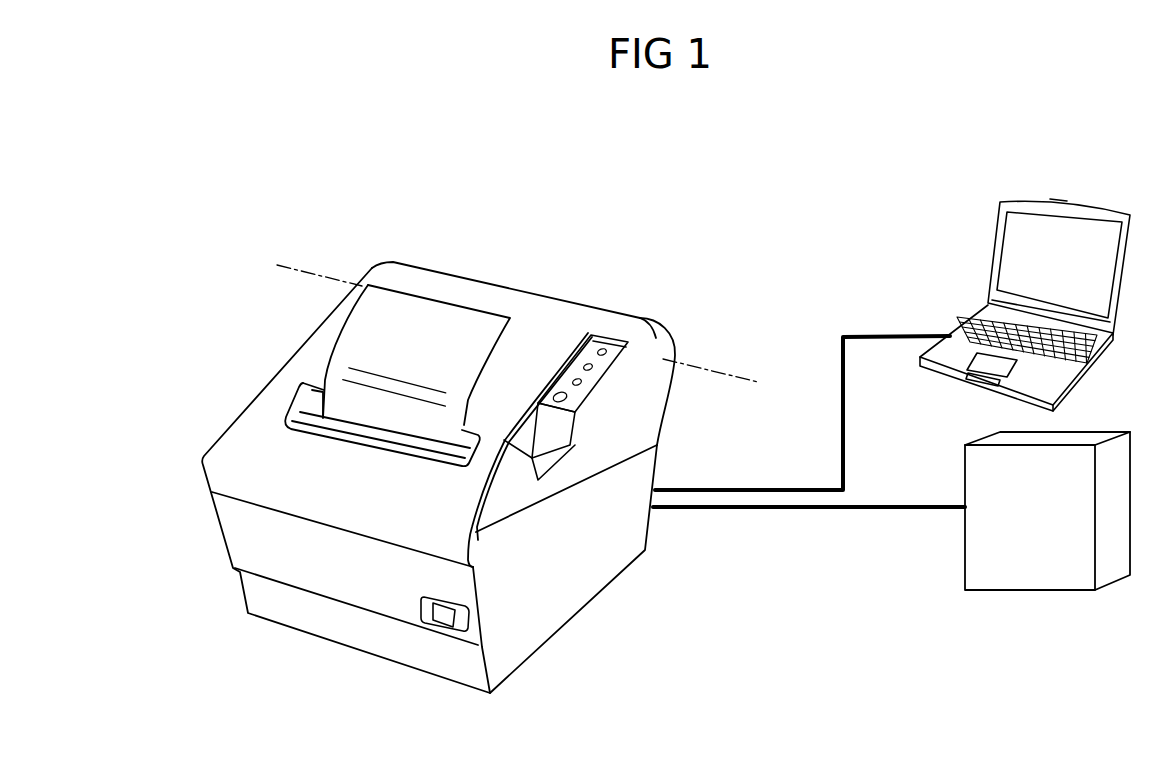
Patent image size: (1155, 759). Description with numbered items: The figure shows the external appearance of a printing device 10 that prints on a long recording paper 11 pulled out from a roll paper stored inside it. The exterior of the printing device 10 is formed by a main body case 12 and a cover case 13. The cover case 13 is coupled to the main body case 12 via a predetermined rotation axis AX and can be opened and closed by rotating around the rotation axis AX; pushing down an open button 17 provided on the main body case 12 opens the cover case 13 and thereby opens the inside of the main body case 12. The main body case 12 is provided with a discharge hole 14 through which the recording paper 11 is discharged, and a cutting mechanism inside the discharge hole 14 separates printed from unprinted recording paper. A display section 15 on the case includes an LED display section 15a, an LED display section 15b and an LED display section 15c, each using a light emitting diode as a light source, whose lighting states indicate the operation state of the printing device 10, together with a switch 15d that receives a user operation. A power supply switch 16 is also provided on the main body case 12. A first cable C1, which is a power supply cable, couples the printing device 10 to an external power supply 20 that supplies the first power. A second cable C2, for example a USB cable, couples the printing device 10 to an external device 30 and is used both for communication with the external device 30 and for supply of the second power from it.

The printing device 10 is at (460, 250).
The recording paper 11 is at (358, 320).
The main body case 12 is at (668, 372).
The cover case 13 is at (537, 298).
The discharge hole 14 is at (303, 382).
The display section 15 is at (607, 338).
The LED display section 15a is at (606, 353).
The LED display section 15b is at (591, 368).
The LED display section 15c is at (579, 383).
The switch 15d is at (562, 398).
The power supply switch 16 is at (437, 623).
The open button 17 is at (567, 447).
The external power supply 20 is at (1038, 593).
The external device 30 is at (1097, 207).
The first cable C1 is at (873, 510).
The second cable C2 is at (873, 335).
The rotation axis AX is at (735, 370).